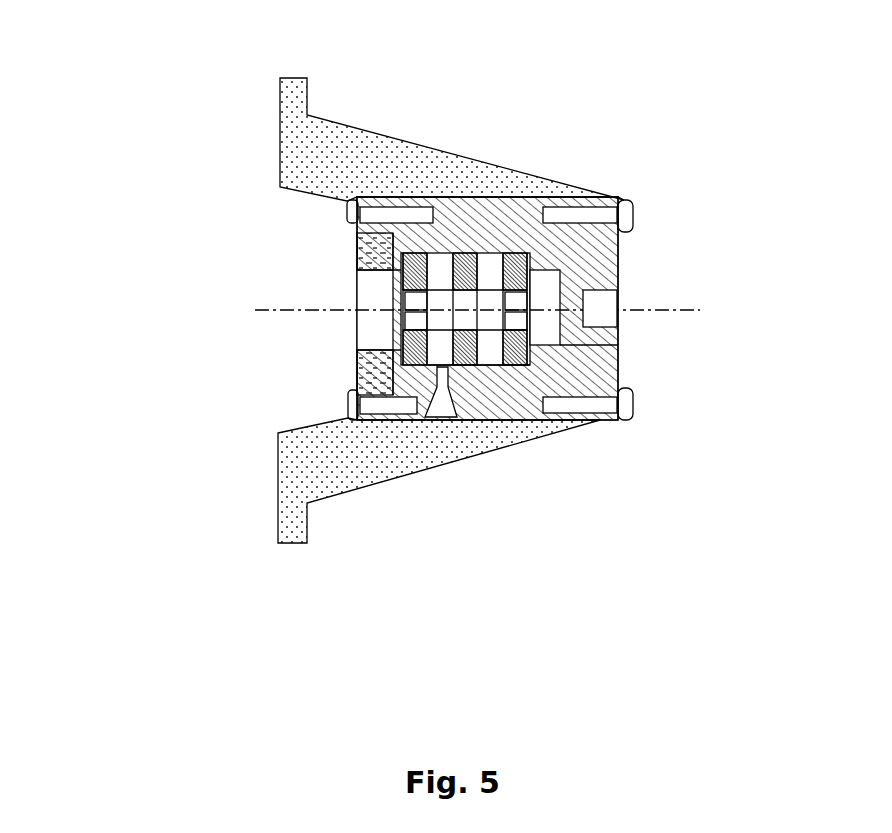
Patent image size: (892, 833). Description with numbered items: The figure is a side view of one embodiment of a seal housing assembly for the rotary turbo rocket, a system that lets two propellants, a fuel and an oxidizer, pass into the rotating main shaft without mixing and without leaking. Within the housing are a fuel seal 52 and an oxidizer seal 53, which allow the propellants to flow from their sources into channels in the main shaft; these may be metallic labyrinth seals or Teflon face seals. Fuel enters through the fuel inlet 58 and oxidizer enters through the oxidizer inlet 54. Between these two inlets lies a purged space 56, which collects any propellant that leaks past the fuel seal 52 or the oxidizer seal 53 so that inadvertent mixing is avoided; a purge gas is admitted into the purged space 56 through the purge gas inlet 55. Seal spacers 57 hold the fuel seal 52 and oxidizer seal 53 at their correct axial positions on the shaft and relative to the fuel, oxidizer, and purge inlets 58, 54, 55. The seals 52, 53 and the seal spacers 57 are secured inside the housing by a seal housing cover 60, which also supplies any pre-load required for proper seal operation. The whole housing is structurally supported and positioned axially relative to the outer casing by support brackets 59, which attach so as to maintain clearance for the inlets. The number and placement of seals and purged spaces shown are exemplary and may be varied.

The fuel seal 52 is at (430, 253).
The oxidizer seal 53 is at (527, 255).
The oxidizer inlet 54 is at (618, 303).
The purge gas inlet 55 is at (522, 345).
The purged space 56 is at (505, 357).
The seal spacers 57 is at (485, 342).
The fuel inlet 58 is at (442, 407).
The support brackets 59 is at (307, 468).
The seal housing cover 60 is at (385, 250).